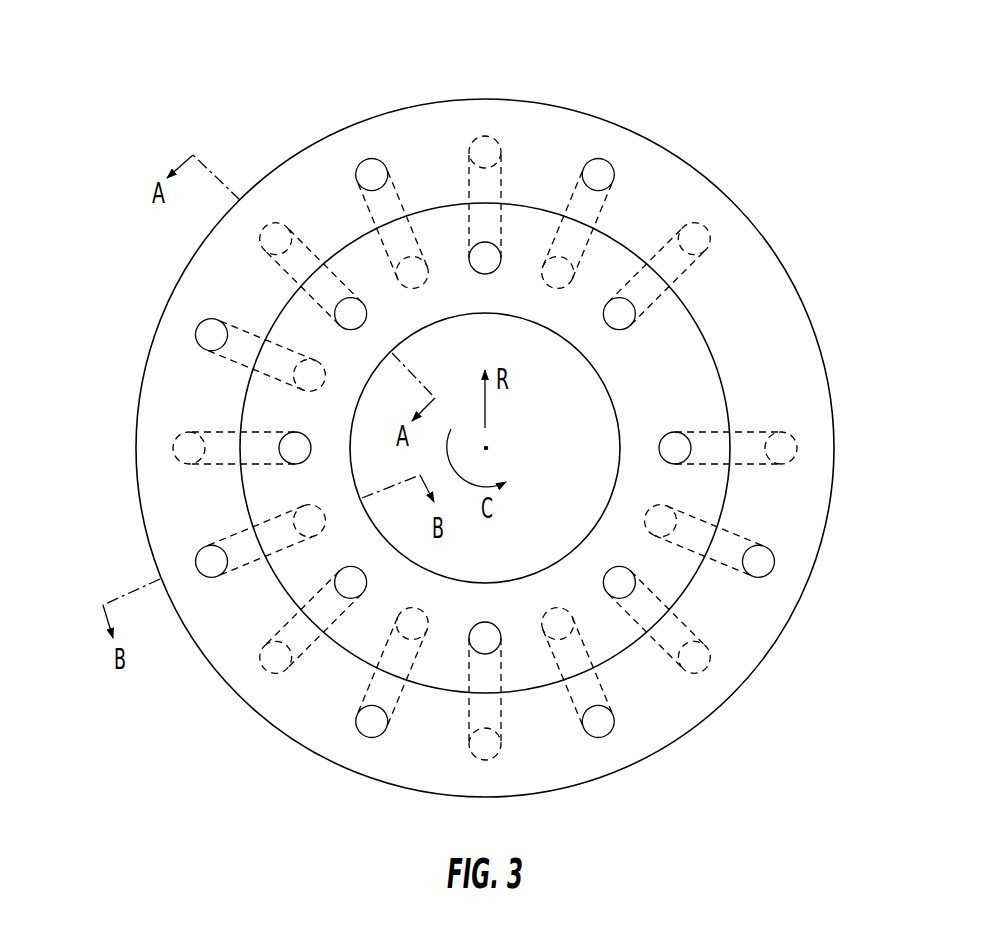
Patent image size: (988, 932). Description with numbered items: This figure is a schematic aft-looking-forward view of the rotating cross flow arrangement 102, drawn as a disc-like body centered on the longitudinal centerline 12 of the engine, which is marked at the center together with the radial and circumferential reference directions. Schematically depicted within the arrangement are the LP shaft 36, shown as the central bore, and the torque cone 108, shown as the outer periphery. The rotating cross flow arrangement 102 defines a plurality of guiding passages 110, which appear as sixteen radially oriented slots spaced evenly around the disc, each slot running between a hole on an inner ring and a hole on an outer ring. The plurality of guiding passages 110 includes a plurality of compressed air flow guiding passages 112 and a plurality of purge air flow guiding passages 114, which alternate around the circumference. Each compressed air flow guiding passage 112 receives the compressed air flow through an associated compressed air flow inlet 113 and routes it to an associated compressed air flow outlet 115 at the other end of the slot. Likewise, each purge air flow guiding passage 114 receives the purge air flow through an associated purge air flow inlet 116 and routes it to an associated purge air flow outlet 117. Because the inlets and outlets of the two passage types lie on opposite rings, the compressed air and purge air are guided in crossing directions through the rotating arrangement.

The rotating cross flow arrangement 102 is at (468, 412).
The torque cone 108 is at (320, 138).
The guiding passages 110 is at (463, 147).
The compressed air flow guiding passages 112 is at (748, 466).
The compressed air flow inlet 113 is at (626, 302).
The purge air flow guiding passages 114 is at (721, 566).
The compressed air flow outlet 115 is at (716, 251).
The purge air flow inlet 116 is at (541, 262).
The purge air flow outlet 117 is at (602, 170).
The LP shaft 36 is at (417, 328).
The longitudinal centerline 12 is at (489, 446).